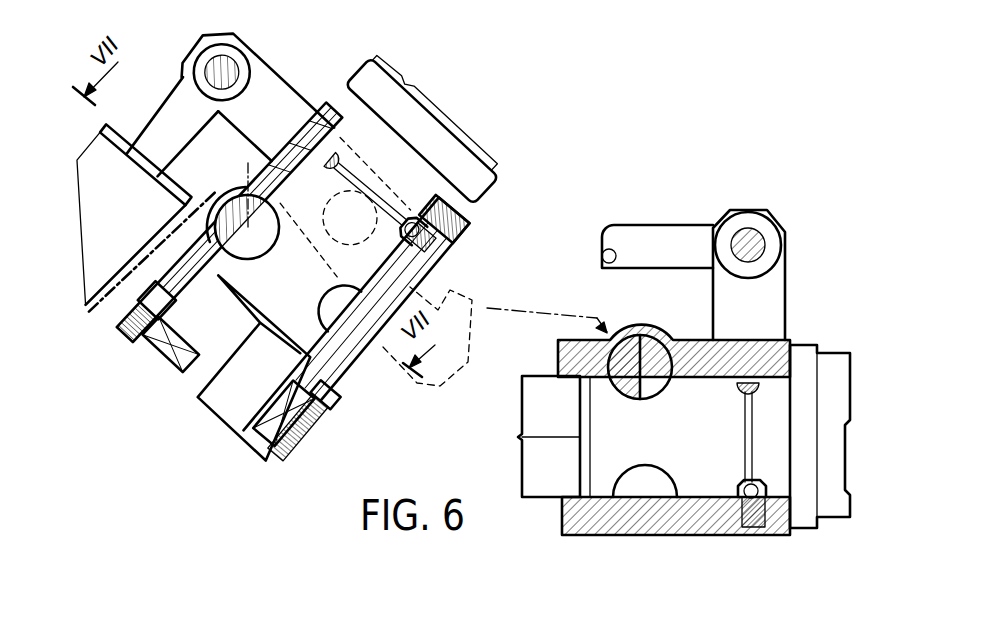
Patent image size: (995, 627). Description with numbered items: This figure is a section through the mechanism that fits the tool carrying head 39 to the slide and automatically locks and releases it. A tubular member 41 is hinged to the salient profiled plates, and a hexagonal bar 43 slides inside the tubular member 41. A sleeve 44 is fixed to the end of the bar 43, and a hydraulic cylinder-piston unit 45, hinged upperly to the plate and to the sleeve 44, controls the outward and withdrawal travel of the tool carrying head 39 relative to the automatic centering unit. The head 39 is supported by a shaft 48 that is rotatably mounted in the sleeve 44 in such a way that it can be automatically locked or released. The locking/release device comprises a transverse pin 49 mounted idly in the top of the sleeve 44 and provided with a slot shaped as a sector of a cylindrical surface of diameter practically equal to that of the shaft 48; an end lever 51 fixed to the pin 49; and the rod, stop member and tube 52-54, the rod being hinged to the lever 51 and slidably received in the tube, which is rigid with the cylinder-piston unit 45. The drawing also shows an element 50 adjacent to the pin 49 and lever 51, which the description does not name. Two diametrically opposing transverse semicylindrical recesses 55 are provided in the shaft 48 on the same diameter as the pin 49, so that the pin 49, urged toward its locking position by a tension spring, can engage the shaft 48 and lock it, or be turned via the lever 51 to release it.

The tool carrying head 39 is at (471, 186).
The tubular member 41 is at (312, 426).
The hexagonal bar 43 is at (200, 395).
The sleeve 44 is at (337, 360).
The hydraulic cylinder-piston unit 45 is at (128, 152).
The shaft 48 is at (398, 271).
The transverse pin 49 is at (210, 243).
The ball 50 is at (268, 250).
The end lever 51 is at (250, 163).
The rod, stop member and tube 52-54 is at (212, 203).
The transverse semicylindrical recesses 55 is at (657, 480).